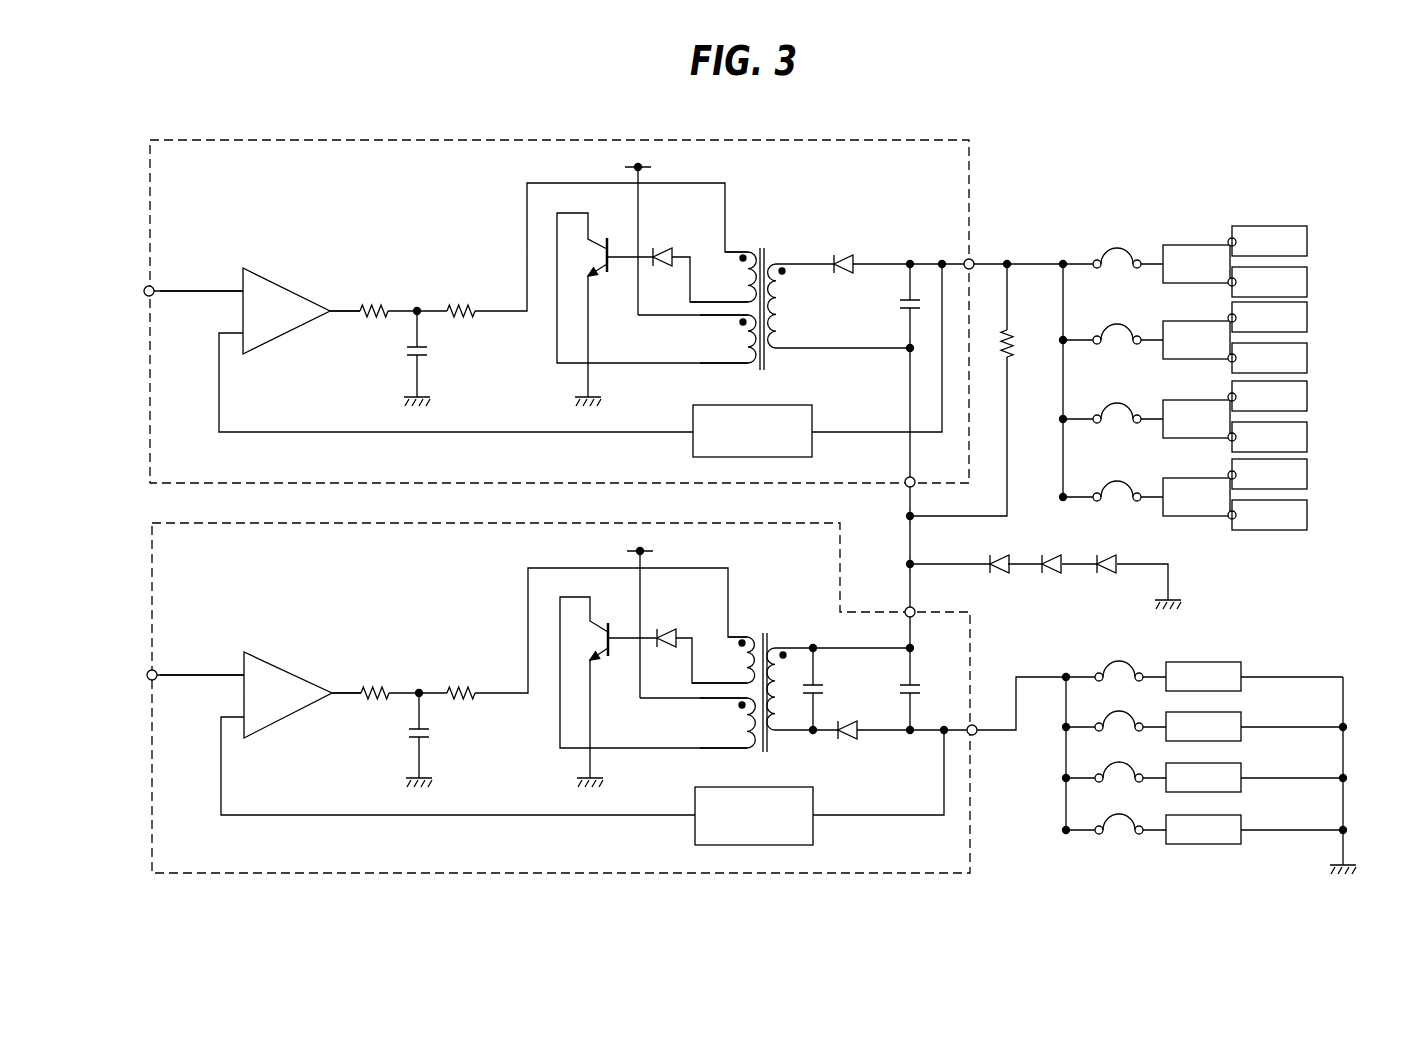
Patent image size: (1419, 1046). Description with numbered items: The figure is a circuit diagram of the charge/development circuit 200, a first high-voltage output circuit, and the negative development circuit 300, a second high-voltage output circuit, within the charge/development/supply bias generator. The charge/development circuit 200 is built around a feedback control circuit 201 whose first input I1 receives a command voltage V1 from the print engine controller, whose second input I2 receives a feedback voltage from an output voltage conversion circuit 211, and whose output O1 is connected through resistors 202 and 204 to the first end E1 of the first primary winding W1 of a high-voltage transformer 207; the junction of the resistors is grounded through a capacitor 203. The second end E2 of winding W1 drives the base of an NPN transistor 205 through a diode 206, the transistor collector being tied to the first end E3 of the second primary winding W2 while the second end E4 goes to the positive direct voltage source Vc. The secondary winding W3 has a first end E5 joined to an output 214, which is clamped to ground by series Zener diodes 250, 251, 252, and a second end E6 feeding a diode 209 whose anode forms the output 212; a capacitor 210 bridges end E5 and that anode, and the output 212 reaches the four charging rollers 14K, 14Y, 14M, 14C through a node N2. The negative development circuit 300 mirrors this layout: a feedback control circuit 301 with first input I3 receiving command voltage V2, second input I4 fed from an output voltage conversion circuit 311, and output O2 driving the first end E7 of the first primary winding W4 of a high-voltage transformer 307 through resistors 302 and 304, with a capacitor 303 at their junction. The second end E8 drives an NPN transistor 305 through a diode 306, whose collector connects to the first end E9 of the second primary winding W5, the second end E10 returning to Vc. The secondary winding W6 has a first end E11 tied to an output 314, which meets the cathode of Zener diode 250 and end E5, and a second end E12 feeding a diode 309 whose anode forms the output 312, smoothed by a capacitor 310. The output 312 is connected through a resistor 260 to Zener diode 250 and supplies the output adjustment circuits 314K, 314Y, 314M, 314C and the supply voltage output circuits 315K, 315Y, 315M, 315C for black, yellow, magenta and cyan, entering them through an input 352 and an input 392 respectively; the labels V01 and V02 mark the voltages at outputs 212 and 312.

The negative development circuit 300 is at (186, 139).
The charge/development circuit 200 is at (186, 522).
The feedback control circuit 301 is at (292, 289).
The feedback control circuit 201 is at (292, 690).
The resistor 302 is at (387, 308).
The resistor 202 is at (387, 690).
The capacitor 303 is at (430, 351).
The capacitor 203 is at (430, 735).
The resistor 304 is at (470, 308).
The resistor 204 is at (470, 690).
The NPN transistor 305 is at (600, 254).
The NPN transistor 205 is at (598, 637).
The diode 306 is at (662, 246).
The diode 206 is at (662, 628).
The high-voltage transformer 307 is at (760, 286).
The high-voltage transformer 207 is at (767, 669).
The diode 309 is at (857, 262).
The diode 209 is at (861, 738).
The capacitor 310 is at (900, 303).
The capacitor 210 is at (918, 688).
The output voltage conversion circuit 311 is at (814, 421).
The output voltage conversion circuit 211 is at (815, 805).
The output 312 is at (973, 260).
The output 212 is at (976, 734).
The output 314 is at (907, 486).
The output 214 is at (917, 610).
The resistor 260 is at (1015, 345).
The Zener diode 250 is at (1010, 562).
The Zener diode 251 is at (1063, 562).
The Zener diode 252 is at (1118, 562).
The input 352 is at (1145, 380).
The input 392 is at (1206, 394).
The output adjustment circuit 314K is at (1308, 242).
The supply voltage output circuit 315K is at (1308, 282).
The output adjustment circuit 314Y is at (1308, 318).
The supply voltage output circuit 315Y is at (1308, 358).
The output adjustment circuit 314M is at (1308, 397).
The supply voltage output circuit 315M is at (1308, 437).
The output adjustment circuit 314C is at (1308, 475).
The supply voltage output circuit 315C is at (1308, 515).
The charging roller 14K is at (1230, 662).
The charging roller 14Y is at (1230, 712).
The charging roller 14M is at (1230, 763).
The charging roller 14C is at (1230, 815).
The first primary winding W1 is at (746, 660).
The second primary winding W2 is at (746, 726).
The secondary winding W3 is at (784, 696).
The first primary winding W4 is at (747, 276).
The second primary winding W5 is at (747, 342).
The secondary winding W6 is at (782, 316).
The first end E1 is at (743, 634).
The second end E2 is at (745, 680).
The first end E3 is at (745, 750).
The second end E4 is at (745, 705).
The first end E5 is at (785, 648).
The second end E6 is at (785, 735).
The first end E7 is at (743, 250).
The second end E8 is at (745, 298).
The first end E9 is at (745, 366).
The second end E10 is at (745, 322).
The first end E11 is at (785, 350).
The second end E12 is at (791, 263).
The first input I1 is at (210, 673).
The second input I2 is at (232, 717).
The first input I3 is at (210, 289).
The second input I4 is at (232, 333).
The output O1 is at (344, 690).
The output O2 is at (344, 308).
The command voltage V1 is at (177, 675).
The command voltage V2 is at (175, 291).
The output voltage V01 is at (1032, 663).
The output voltage V02 is at (1027, 251).
The node N2 is at (1068, 675).
The positive direct voltage source Vc is at (697, 233).